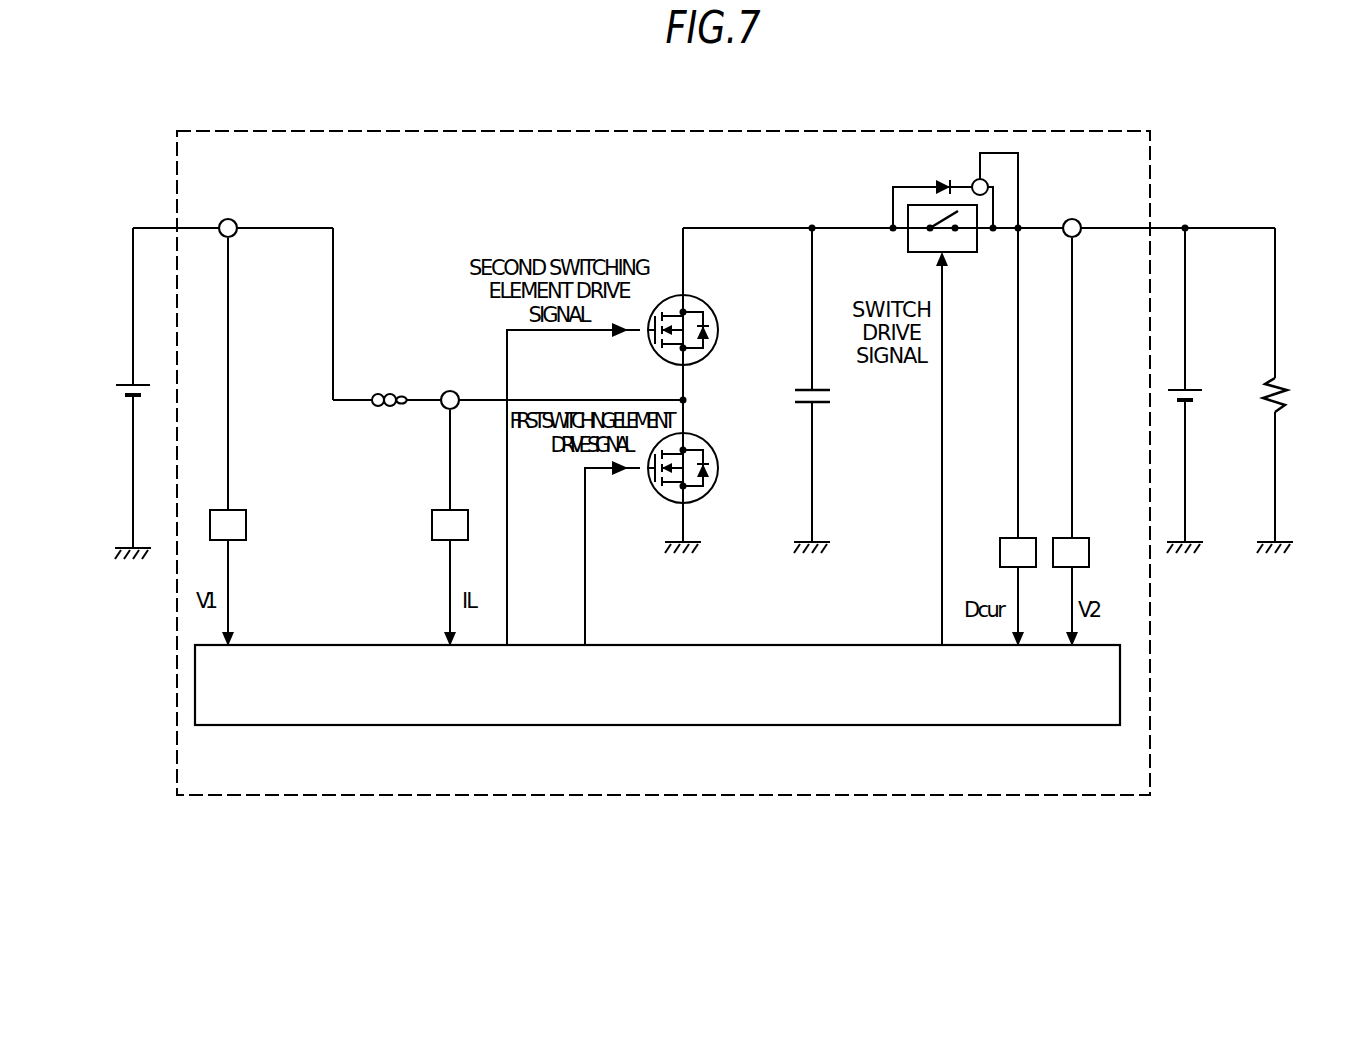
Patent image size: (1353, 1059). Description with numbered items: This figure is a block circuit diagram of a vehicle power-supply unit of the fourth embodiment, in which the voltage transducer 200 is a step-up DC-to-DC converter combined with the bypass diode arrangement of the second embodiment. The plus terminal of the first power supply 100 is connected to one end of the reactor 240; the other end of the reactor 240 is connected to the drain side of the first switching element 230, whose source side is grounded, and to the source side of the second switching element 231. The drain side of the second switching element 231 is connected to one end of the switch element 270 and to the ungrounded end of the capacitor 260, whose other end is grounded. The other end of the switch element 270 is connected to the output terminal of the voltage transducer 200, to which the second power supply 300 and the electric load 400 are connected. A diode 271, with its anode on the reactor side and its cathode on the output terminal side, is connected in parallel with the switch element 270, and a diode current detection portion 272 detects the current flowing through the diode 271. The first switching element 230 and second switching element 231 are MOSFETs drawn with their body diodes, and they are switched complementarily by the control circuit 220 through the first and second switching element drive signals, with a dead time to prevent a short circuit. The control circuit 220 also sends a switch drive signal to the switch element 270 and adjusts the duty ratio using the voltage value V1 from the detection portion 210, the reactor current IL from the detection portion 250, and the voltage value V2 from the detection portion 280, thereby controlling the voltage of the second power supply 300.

The first power supply 100 is at (109, 362).
The voltage transducer 200 is at (663, 437).
The detection portion 210 is at (256, 507).
The control circuit 220 is at (657, 708).
The first switching element 230 is at (705, 494).
The second switching element 231 is at (707, 307).
The reactor 240 is at (399, 367).
The detection portion 250 is at (418, 502).
The capacitor 260 is at (839, 424).
The switch element 270 is at (911, 252).
The diode 271 is at (934, 184).
The diode current detection portion 272 is at (998, 526).
The detection portion 280 is at (1090, 526).
The second power supply 300 is at (1206, 365).
The electric load 400 is at (1305, 371).